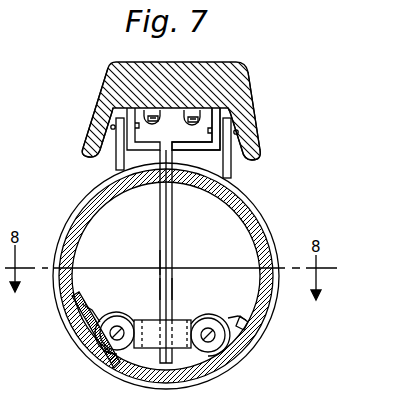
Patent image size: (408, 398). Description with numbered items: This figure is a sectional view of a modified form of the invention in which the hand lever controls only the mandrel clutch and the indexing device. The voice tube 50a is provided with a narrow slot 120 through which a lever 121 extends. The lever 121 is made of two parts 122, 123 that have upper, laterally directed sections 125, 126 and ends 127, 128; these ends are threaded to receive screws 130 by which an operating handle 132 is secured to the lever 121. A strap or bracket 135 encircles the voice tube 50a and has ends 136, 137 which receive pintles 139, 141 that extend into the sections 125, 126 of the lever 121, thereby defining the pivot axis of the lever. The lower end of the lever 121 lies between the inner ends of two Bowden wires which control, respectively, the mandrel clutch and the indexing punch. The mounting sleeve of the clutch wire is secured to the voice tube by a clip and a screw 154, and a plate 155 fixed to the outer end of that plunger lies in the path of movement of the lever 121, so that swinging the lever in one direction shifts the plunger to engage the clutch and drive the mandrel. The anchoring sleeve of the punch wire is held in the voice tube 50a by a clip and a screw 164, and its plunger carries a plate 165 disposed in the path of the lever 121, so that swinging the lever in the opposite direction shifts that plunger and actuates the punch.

The voice tube 50a is at (245, 229).
The narrow slot 120 is at (172, 178).
The lever 121 is at (152, 262).
The lever part 122 is at (160, 285).
The lever part 123 is at (172, 285).
The upper laterally directed section 125 is at (131, 137).
The upper laterally directed section 126 is at (214, 140).
The threaded end 127 is at (143, 111).
The threaded end 128 is at (236, 122).
The screws 130 is at (197, 118).
The operating handle 132 is at (249, 88).
The strap or bracket 135 is at (279, 245).
The bracket end 136 is at (113, 66).
The bracket end 137 is at (238, 70).
The pintle 139 is at (112, 126).
The pintle 141 is at (233, 128).
The screw 154 is at (85, 305).
The plate 155 is at (177, 323).
The screw 164 is at (248, 315).
The plate 165 is at (216, 318).